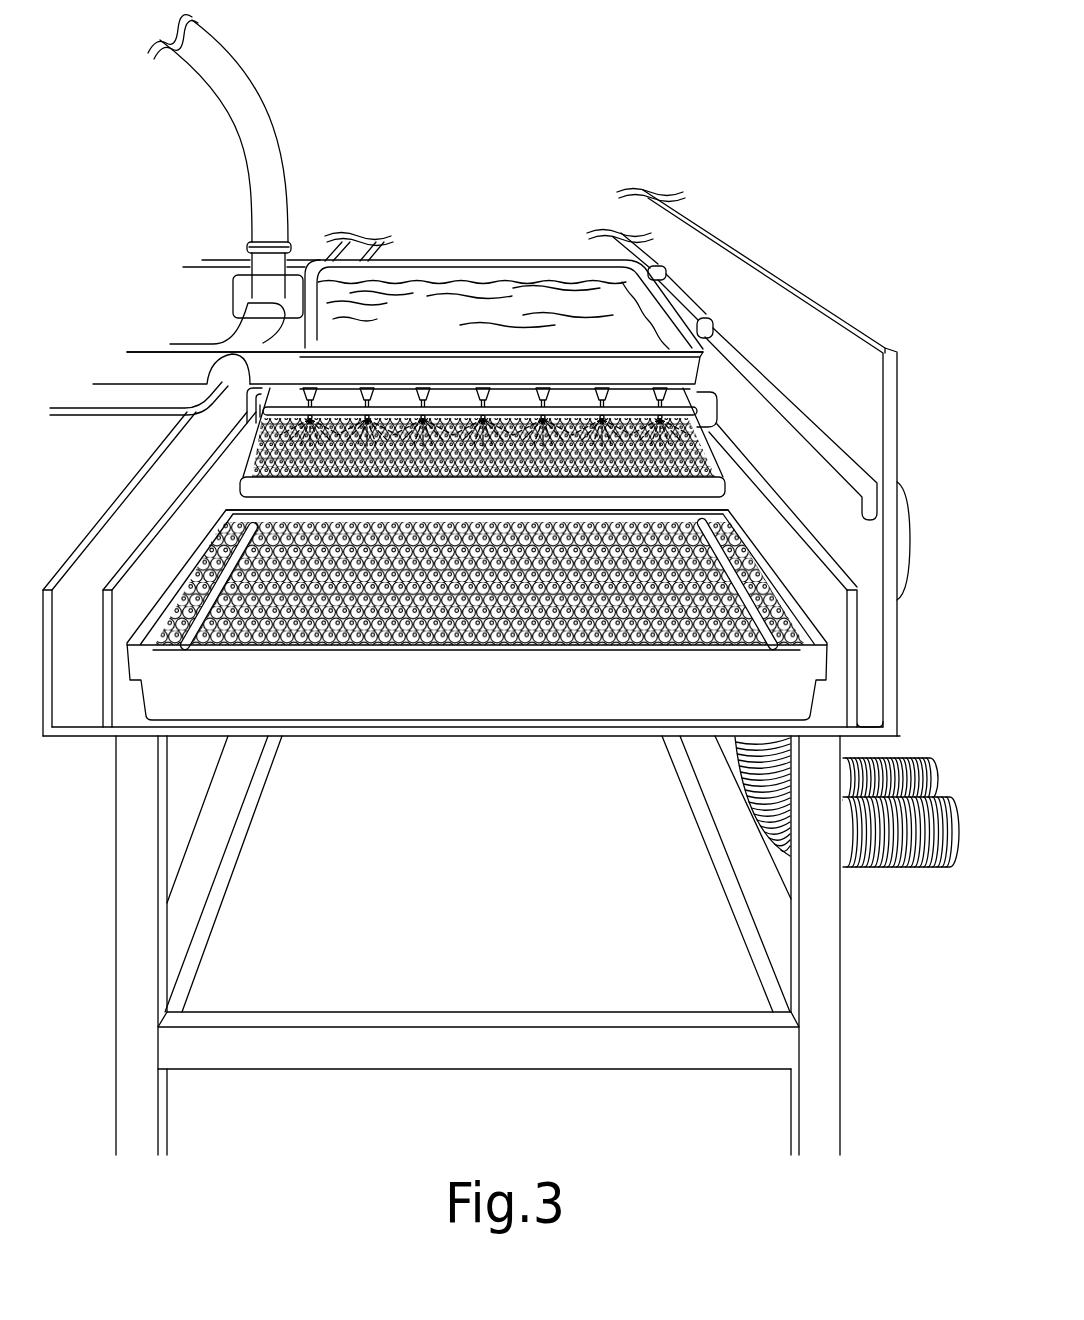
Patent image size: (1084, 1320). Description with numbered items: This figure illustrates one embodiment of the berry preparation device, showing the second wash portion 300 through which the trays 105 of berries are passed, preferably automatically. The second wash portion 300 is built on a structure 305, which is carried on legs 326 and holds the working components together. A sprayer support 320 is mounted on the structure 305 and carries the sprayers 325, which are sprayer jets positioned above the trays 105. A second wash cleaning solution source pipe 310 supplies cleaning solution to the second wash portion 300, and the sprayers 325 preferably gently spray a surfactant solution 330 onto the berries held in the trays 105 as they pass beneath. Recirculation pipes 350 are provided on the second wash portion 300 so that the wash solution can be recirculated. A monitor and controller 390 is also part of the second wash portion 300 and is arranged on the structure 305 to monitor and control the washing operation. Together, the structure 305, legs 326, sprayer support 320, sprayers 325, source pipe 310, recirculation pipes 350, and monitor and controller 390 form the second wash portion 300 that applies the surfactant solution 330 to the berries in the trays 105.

The second wash portion 300 is at (712, 48).
The structure 305 is at (803, 292).
The second wash cleaning solution source pipe 310 is at (245, 75).
The sprayer support 320 is at (457, 259).
The sprayers 325 is at (421, 386).
The surfactant solution 330 is at (680, 425).
The trays 105 is at (242, 480).
The monitor and controller 390 is at (902, 482).
The recirculation pipes 350 is at (888, 770).
The legs 326 is at (116, 899).